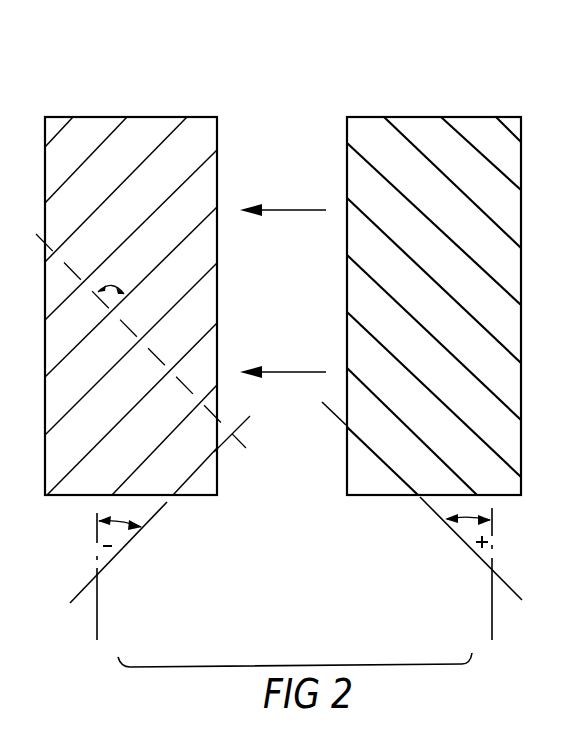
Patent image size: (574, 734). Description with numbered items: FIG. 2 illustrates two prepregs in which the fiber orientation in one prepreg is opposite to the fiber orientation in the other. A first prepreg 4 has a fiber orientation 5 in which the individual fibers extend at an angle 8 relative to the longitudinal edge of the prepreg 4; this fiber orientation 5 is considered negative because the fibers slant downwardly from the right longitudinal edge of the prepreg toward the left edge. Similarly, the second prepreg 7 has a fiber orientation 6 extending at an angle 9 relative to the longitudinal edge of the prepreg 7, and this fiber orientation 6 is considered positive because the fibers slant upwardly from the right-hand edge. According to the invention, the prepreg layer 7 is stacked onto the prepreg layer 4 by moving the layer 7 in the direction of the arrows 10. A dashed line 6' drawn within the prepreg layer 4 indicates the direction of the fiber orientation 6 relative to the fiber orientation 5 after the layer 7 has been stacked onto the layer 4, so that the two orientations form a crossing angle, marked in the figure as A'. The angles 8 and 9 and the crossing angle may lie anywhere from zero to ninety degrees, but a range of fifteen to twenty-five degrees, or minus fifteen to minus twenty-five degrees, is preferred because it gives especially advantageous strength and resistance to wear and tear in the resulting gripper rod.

The first prepreg 4 is at (72, 520).
The fiber orientation 5 is at (104, 146).
The fiber orientation 6 is at (434, 252).
The dashed line 6' is at (158, 358).
The prepreg 7 is at (376, 520).
The angle 8 is at (120, 523).
The angle 9 is at (474, 520).
The arrows 10 is at (292, 210).
The angle between hatch and reference line A' is at (133, 264).